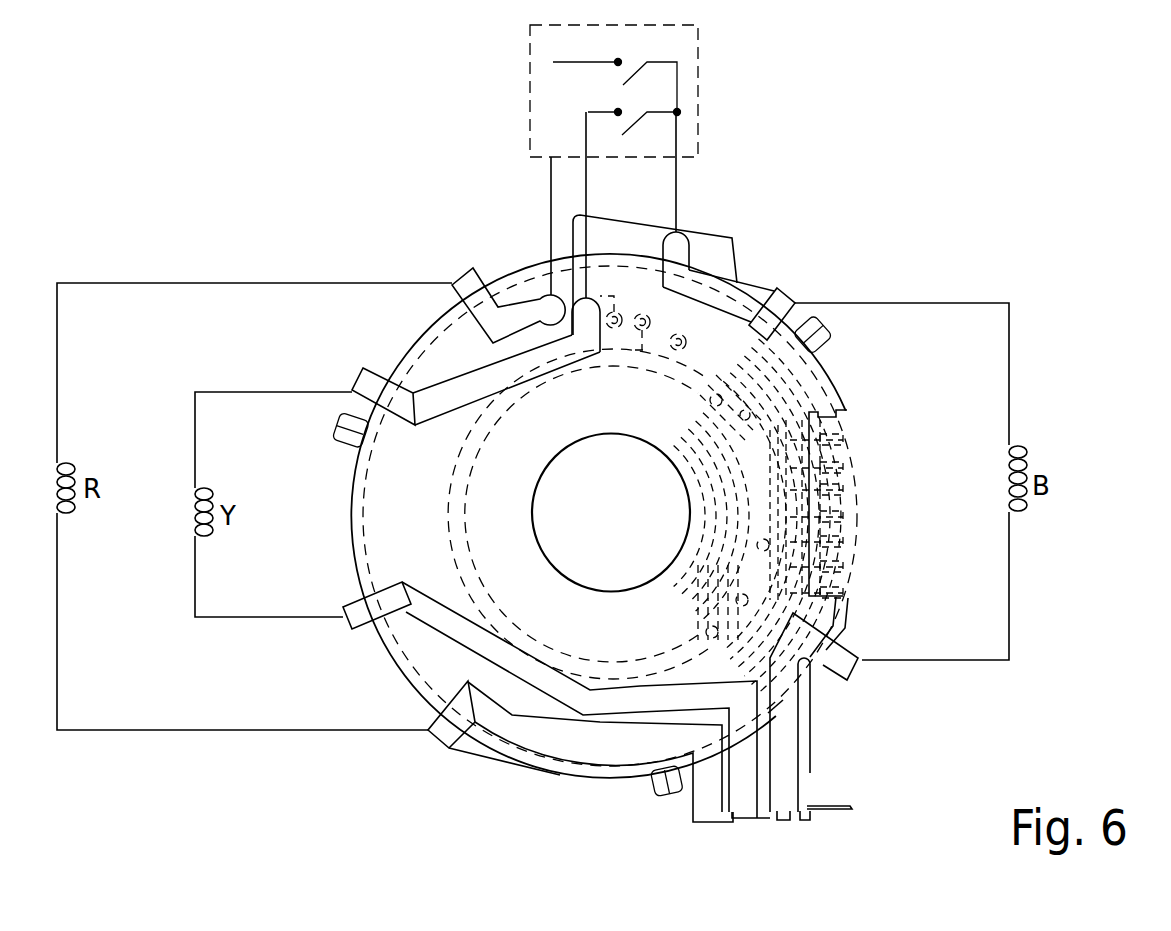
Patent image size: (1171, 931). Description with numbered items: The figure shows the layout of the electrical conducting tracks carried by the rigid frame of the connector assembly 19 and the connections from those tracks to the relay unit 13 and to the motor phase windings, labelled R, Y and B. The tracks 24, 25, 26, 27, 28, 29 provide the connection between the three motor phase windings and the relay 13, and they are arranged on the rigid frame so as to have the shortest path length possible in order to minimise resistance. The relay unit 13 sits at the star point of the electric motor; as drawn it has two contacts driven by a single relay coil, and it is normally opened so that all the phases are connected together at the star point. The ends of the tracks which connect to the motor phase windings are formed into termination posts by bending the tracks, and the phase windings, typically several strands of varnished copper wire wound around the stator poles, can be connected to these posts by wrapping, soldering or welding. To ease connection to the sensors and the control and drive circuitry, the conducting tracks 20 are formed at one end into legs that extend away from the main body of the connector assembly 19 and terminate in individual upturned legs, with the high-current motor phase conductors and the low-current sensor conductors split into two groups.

The relay unit 13 is at (702, 88).
The connector assembly 19 is at (366, 649).
The conducting tracks 20 is at (847, 563).
The track 24 is at (703, 795).
The track 25 is at (752, 803).
The track 26 is at (788, 805).
The track 27 is at (362, 368).
The track 28 is at (457, 281).
The track 29 is at (783, 288).